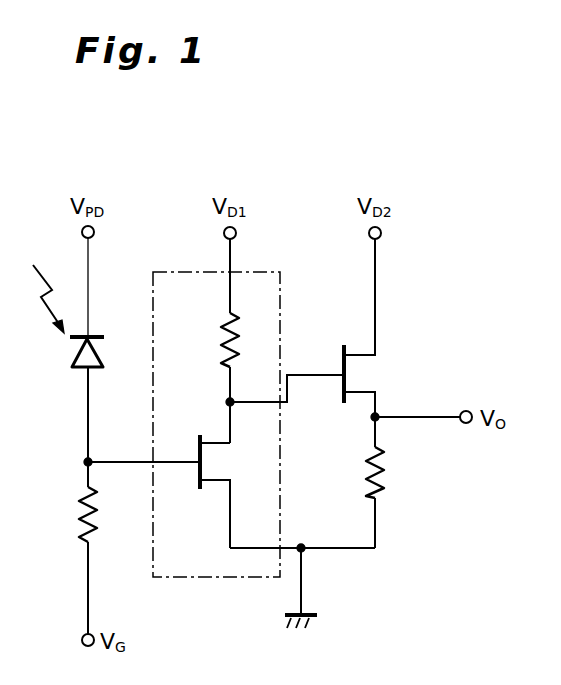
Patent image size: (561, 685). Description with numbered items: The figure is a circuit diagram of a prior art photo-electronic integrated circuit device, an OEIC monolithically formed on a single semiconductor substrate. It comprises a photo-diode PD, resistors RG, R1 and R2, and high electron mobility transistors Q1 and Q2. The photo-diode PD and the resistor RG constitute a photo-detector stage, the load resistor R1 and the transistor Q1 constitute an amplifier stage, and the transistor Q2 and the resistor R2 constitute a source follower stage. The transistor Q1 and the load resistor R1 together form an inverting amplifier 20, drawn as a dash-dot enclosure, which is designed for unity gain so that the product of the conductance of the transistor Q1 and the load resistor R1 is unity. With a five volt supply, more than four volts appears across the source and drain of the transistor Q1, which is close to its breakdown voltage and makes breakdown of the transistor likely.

The inverting amplifier 20 is at (262, 272).
The photo-diode PD is at (67, 316).
The resistor RG is at (66, 514).
The load resistor R1 is at (245, 340).
The high electron mobility transistor Q1 is at (229, 491).
The high electron mobility transistor Q2 is at (375, 328).
The resistor R2 is at (390, 482).